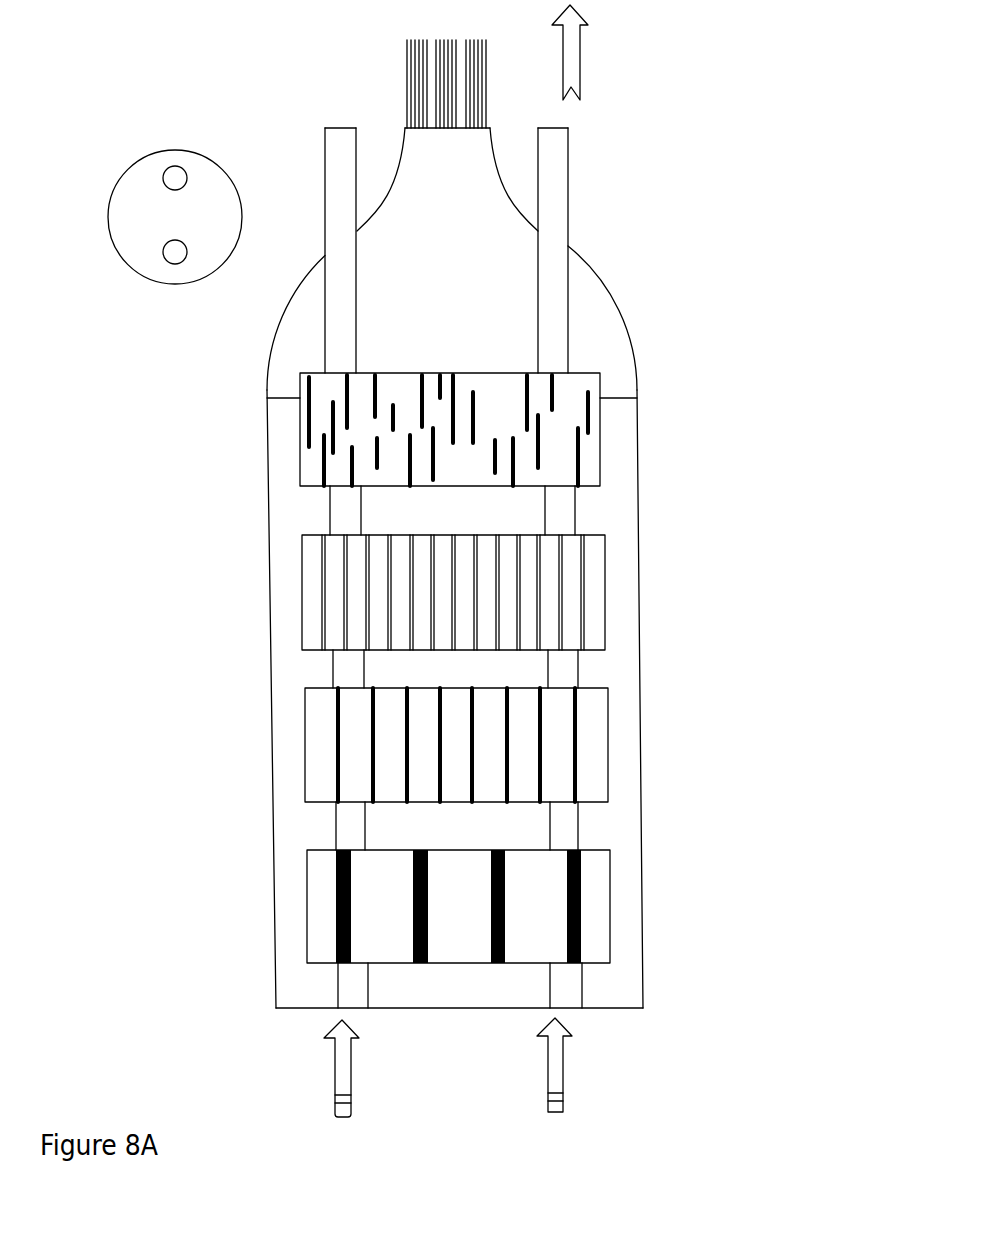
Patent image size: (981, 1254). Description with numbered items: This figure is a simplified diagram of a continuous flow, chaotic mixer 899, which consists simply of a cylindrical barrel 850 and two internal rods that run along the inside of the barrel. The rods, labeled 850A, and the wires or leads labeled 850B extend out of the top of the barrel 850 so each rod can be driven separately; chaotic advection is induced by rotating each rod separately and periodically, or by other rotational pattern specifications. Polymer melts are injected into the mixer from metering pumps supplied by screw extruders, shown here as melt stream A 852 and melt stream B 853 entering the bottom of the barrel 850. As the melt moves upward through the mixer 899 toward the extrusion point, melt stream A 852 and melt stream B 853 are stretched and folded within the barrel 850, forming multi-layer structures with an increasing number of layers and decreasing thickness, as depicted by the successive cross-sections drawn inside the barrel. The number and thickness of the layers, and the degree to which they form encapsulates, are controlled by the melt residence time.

The continuous flow, chaotic mixer 899 is at (665, 598).
The cylindrical barrel 850 is at (175, 180).
The support rods 850A is at (333, 138).
The lead wires 850B is at (425, 82).
The melt stream A 852 is at (335, 1105).
The melt stream B 853 is at (565, 1106).